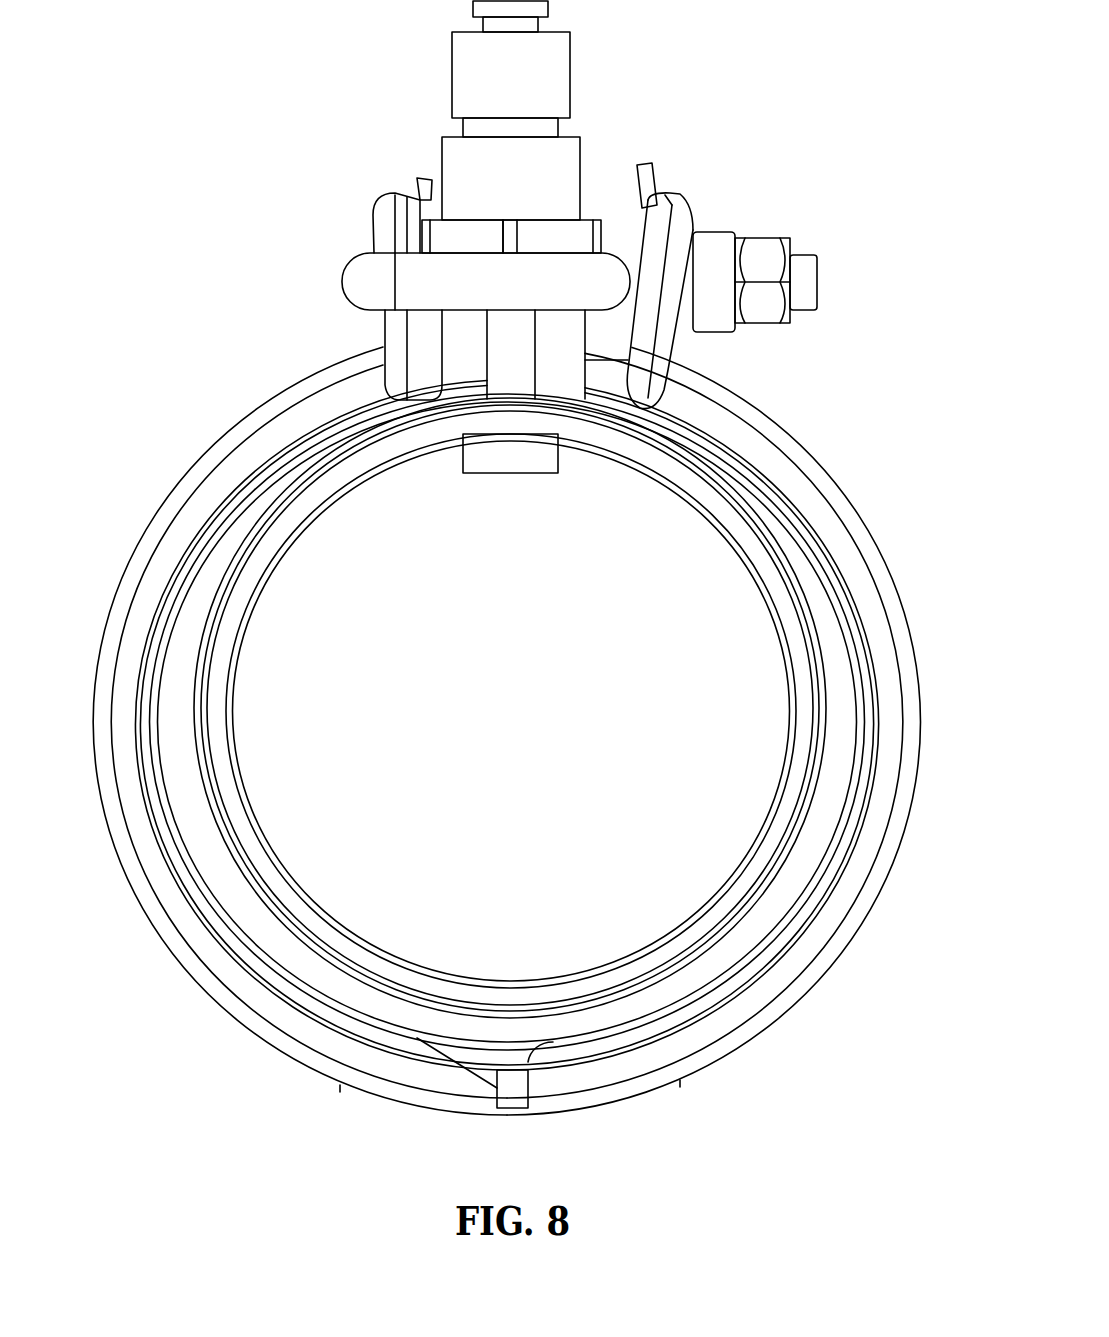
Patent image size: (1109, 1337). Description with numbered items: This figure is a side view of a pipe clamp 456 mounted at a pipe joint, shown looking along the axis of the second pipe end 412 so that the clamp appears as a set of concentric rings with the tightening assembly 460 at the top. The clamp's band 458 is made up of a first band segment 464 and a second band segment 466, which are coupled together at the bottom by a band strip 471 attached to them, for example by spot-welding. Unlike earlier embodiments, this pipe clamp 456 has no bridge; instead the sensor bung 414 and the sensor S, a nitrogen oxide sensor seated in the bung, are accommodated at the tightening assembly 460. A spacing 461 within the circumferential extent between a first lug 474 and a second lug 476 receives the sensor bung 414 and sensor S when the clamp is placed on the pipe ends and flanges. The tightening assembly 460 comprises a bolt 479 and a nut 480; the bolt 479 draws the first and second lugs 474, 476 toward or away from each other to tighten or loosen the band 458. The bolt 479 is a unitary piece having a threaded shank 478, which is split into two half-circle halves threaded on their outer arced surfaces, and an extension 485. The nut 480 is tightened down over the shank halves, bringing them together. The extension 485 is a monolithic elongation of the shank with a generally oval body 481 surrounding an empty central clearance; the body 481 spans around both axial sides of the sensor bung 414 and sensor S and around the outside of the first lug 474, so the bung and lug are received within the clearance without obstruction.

The sensor S is at (533, 57).
The second pipe end 412 is at (493, 1003).
The sensor bung 414 is at (560, 352).
The pipe clamp 456 is at (890, 527).
The band 458 is at (843, 480).
The tightening assembly 460 is at (672, 142).
The spacing 461 is at (609, 330).
The first band segment 464 is at (213, 983).
The second band segment 466 is at (848, 896).
The band strip 471 is at (505, 1112).
The first lug 474 is at (418, 198).
The second lug 476 is at (683, 217).
The threaded shank 478 is at (635, 262).
The bolt 479 is at (464, 298).
The nut 480 is at (767, 303).
The body 481 is at (345, 275).
The extension 485 is at (503, 292).